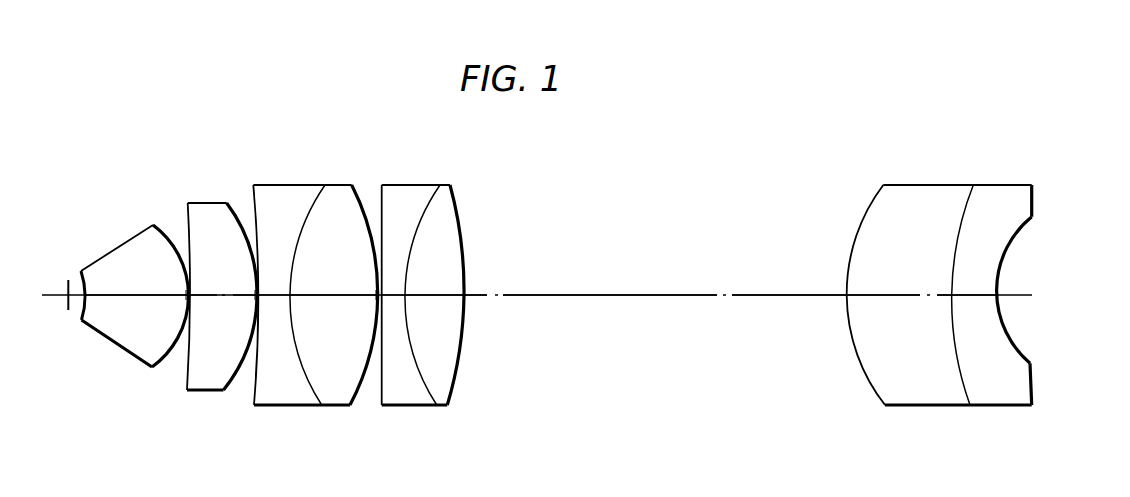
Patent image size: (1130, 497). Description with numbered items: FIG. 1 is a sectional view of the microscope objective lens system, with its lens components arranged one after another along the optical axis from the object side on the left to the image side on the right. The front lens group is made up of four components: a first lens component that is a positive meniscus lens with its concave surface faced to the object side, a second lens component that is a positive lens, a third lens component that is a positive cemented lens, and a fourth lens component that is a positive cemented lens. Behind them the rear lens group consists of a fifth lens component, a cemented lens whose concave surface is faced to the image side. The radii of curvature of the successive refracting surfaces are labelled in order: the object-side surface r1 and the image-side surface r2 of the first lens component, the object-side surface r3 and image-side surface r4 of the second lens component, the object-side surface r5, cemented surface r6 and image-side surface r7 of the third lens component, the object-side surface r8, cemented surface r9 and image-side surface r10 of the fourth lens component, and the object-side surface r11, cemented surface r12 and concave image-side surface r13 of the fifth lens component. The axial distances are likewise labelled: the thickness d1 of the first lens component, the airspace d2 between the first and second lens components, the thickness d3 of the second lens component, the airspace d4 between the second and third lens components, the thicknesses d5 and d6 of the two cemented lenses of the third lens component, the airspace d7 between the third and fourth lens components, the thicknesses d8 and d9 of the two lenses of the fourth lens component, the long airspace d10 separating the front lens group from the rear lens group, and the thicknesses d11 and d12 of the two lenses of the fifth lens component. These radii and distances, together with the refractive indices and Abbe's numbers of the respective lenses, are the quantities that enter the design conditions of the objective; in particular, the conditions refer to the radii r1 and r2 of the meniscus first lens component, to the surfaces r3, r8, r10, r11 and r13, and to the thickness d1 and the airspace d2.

The radius of curvature of the object-side surface of the first lens component r1 is at (80, 314).
The radius of curvature of the image-side surface of the first lens component r2 is at (153, 370).
The radius of curvature of the object-side surface of the second lens component r3 is at (187, 392).
The radius of curvature of the image-side surface of the second lens component r4 is at (224, 392).
The radius of curvature of the object-side surface of the third lens component r5 is at (254, 407).
The radius of curvature of the cemented surface of the third lens component r6 is at (322, 407).
The radius of curvature of the image-side surface of the third lens component r7 is at (353, 407).
The radius of curvature of the object-side surface of the fourth lens component r8 is at (381, 407).
The radius of curvature of the cemented surface of the fourth lens component r9 is at (437, 407).
The radius of curvature of the image-side surface of the fourth lens component r10 is at (451, 407).
The radius of curvature of the object-side surface of the fifth lens component r11 is at (880, 400).
The radius of curvature of the cemented surface of the fifth lens component r12 is at (968, 400).
The radius of curvature of the image-side surface of the fifth lens component r13 is at (1031, 365).
The thickness of the first lens component d1 is at (122, 294).
The airspace between the first lens component and the second lens component d2 is at (188, 294).
The thickness of the second lens component d3 is at (213, 294).
The airspace between the second lens component and the third lens component d4 is at (256, 293).
The thickness of the object-side lens of the third lens component d5 is at (278, 294).
The thickness of the image-side lens of the third lens component d6 is at (322, 294).
The airspace between the third lens component and the fourth lens component d7 is at (377, 293).
The thickness of the object-side lens of the fourth lens component d8 is at (395, 294).
The thickness of the image-side lens of the fourth lens component d9 is at (432, 294).
The airspace between the fourth lens component and the fifth lens component d10 is at (636, 294).
The thickness of the object-side lens of the fifth lens component d11 is at (895, 294).
The thickness of the image-side lens of the fifth lens component d12 is at (973, 294).